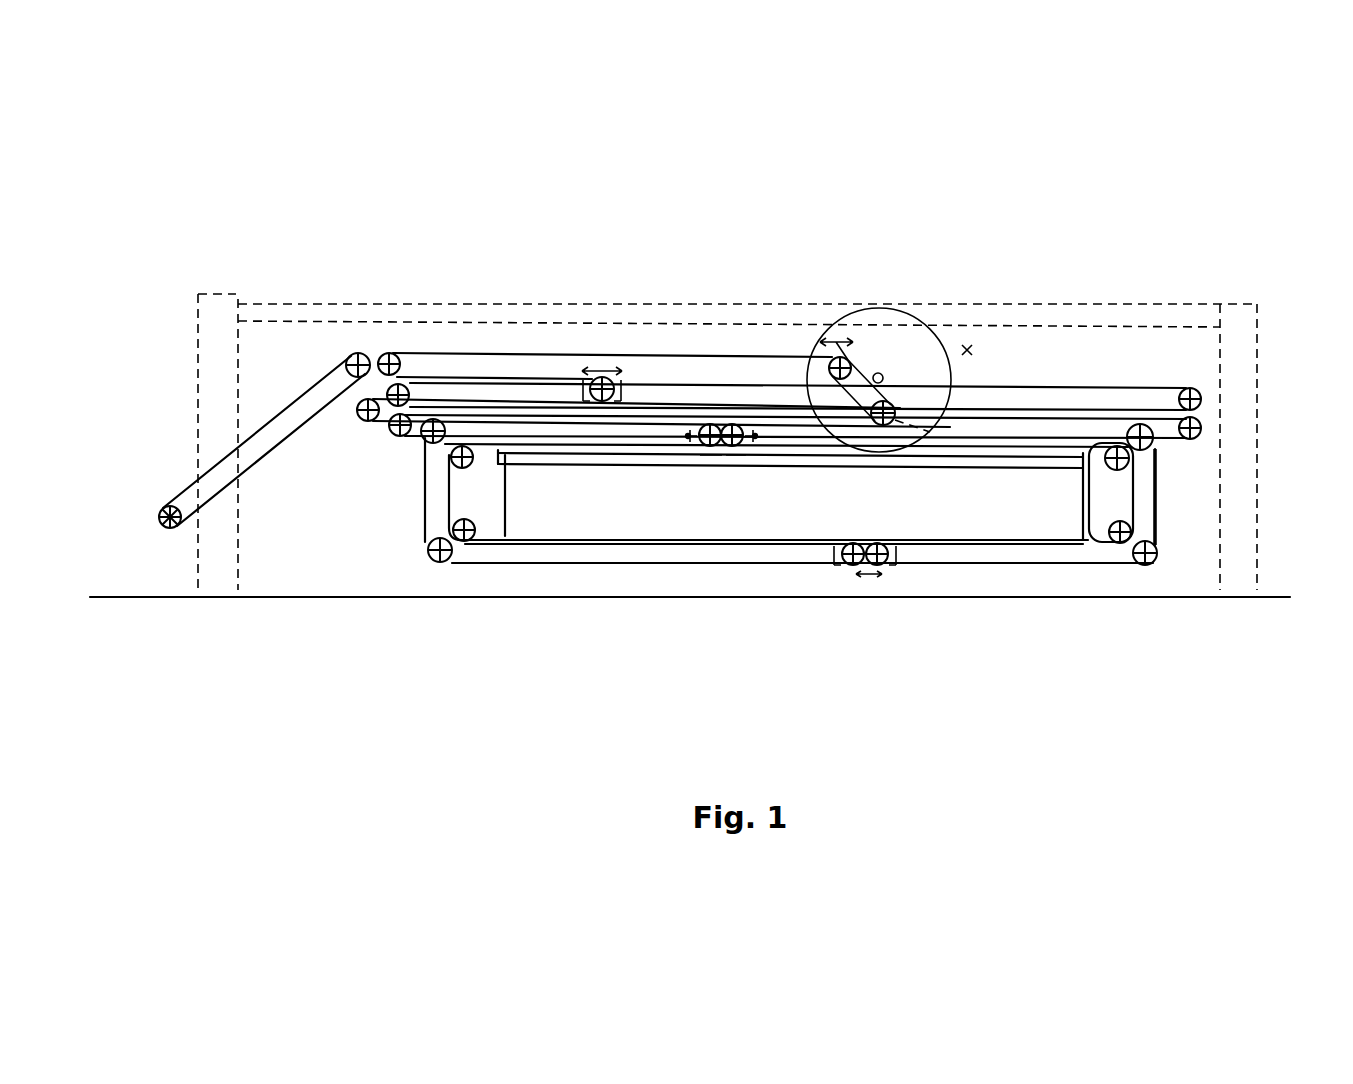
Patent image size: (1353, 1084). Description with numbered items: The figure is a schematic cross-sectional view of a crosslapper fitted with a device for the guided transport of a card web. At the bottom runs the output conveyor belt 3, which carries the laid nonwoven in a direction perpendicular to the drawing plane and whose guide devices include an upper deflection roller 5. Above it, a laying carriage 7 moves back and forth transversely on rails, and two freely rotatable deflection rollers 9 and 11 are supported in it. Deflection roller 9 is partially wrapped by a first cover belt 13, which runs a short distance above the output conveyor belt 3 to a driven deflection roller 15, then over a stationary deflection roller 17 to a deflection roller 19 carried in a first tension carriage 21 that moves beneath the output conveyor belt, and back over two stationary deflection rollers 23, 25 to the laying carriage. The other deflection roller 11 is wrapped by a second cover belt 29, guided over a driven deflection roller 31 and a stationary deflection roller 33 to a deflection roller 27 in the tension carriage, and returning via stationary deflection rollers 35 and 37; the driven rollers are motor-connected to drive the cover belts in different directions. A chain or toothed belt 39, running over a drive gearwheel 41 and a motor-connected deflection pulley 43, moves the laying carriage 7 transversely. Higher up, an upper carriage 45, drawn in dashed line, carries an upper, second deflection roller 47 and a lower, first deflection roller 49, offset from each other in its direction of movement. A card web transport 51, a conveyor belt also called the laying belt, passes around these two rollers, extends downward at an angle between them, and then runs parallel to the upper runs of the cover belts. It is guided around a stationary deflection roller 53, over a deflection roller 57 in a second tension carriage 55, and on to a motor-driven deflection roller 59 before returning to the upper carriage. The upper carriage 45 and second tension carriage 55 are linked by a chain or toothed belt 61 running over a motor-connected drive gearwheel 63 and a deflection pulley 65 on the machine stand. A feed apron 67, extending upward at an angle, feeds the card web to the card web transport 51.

The output conveyor belt 3 is at (580, 512).
The upper deflection roller 5 is at (1005, 458).
The laying carriage 7 is at (688, 446).
The deflection roller 9 is at (727, 446).
The deflection roller 11 is at (752, 448).
The first cover belt 13 is at (423, 473).
The driven deflection roller 15 is at (423, 463).
The stationary deflection roller 17 is at (477, 543).
The deflection roller 19 is at (855, 567).
The first tension carriage 21 is at (897, 556).
The stationary deflection roller 23 is at (426, 563).
The stationary deflection roller 25 is at (425, 445).
The deflection roller 27 is at (887, 565).
The second cover belt 29 is at (1158, 517).
The driven deflection roller 31 is at (1113, 470).
The stationary deflection roller 33 is at (1120, 543).
The stationary deflection roller 35 is at (1152, 560).
The stationary deflection roller 37 is at (1158, 460).
The chain or toothed belt 39 is at (1160, 443).
The drive gearwheel 41 is at (1202, 427).
The deflection pulley 43 is at (395, 447).
The upper carriage 45 is at (867, 357).
The upper, second deflection roller 47 is at (840, 357).
The lower, first deflection roller 49 is at (892, 403).
The card web transport 51 is at (694, 356).
The deflection roller 53 is at (357, 410).
The second tension carriage 55 is at (621, 378).
The deflection roller 57 is at (597, 378).
The motor-driven deflection roller 59 is at (398, 353).
The chain or toothed belt 61 is at (1097, 385).
The drive gearwheel 63 is at (1200, 395).
The deflection pulley 65 is at (350, 392).
The feed apron 67 is at (190, 486).